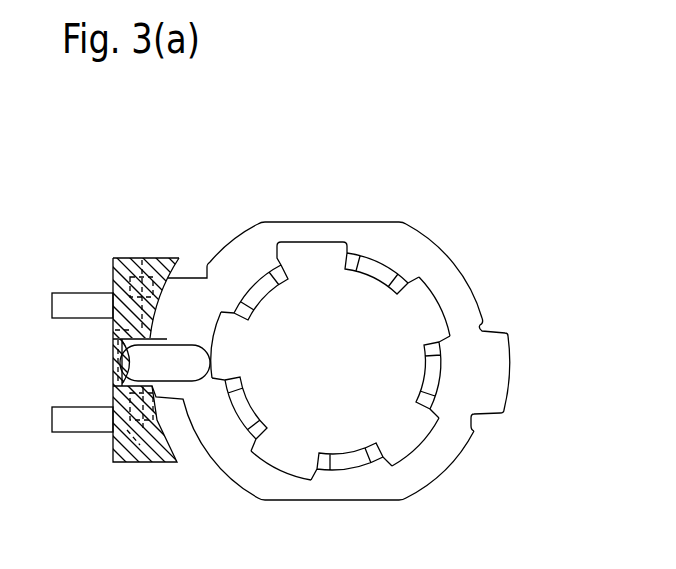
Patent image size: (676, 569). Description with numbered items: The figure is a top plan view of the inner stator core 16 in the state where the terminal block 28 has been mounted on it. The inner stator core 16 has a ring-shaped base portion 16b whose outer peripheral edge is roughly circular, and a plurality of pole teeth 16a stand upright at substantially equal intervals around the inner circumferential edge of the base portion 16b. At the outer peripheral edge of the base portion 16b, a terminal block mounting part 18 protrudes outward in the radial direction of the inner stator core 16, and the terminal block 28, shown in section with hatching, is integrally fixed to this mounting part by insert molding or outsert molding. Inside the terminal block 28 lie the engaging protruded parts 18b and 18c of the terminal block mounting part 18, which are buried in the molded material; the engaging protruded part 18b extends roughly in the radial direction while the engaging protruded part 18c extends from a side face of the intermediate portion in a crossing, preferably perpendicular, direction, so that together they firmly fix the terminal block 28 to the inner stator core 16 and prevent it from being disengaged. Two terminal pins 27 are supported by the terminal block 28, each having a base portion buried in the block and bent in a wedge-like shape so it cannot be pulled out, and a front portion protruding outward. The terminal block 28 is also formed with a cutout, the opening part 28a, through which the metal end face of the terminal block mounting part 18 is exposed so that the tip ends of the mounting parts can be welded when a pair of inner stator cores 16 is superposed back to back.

The inner stator core 16 is at (325, 222).
The pole teeth 16a is at (383, 272).
The base portion 16b is at (433, 458).
The terminal block mounting part 18 is at (152, 465).
The engaging protruded part 18b is at (144, 258).
The engaging protruded part 18c is at (155, 412).
The terminal pin 27 is at (82, 302).
The terminal block 28 is at (170, 258).
The opening part 28a is at (112, 362).